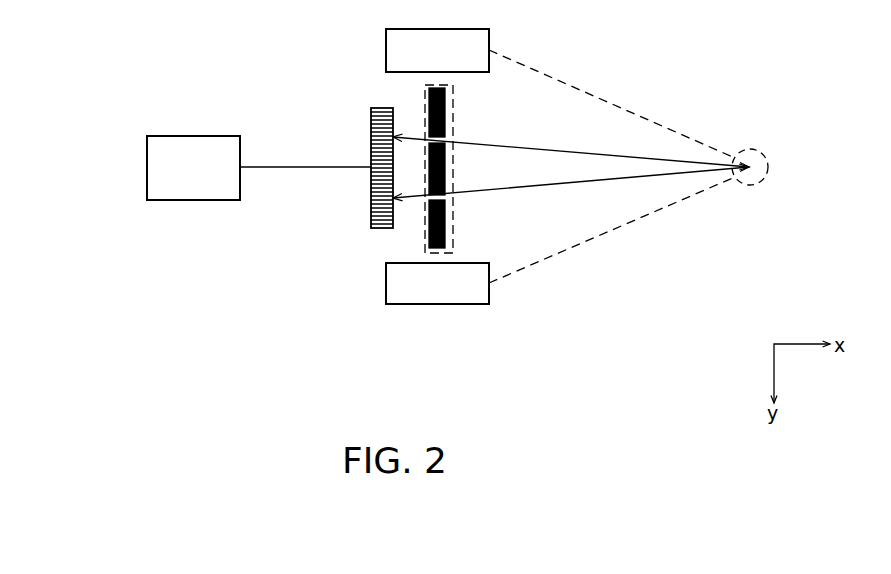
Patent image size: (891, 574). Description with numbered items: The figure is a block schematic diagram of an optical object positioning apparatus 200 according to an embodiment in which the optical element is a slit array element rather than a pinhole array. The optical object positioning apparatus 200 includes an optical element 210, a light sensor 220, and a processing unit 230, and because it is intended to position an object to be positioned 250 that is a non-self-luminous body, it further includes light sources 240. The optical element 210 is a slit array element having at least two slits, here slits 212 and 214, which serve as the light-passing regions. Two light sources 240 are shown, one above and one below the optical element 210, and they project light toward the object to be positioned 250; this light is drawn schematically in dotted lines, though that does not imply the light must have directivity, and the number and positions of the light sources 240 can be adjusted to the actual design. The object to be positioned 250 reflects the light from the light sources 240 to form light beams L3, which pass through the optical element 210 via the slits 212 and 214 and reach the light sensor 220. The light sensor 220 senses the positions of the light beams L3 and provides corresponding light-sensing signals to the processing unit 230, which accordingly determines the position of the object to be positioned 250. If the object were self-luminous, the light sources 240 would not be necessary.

The optical object positioning apparatus 200 is at (565, 322).
The optical element 210 is at (475, 169).
The slit 212 is at (446, 140).
The slit 214 is at (446, 201).
The light sensor 220 is at (371, 137).
The processing unit 230 is at (147, 170).
The light source 240 is at (386, 48).
The object to be positioned 250 is at (752, 149).
The light beam L3 is at (561, 151).